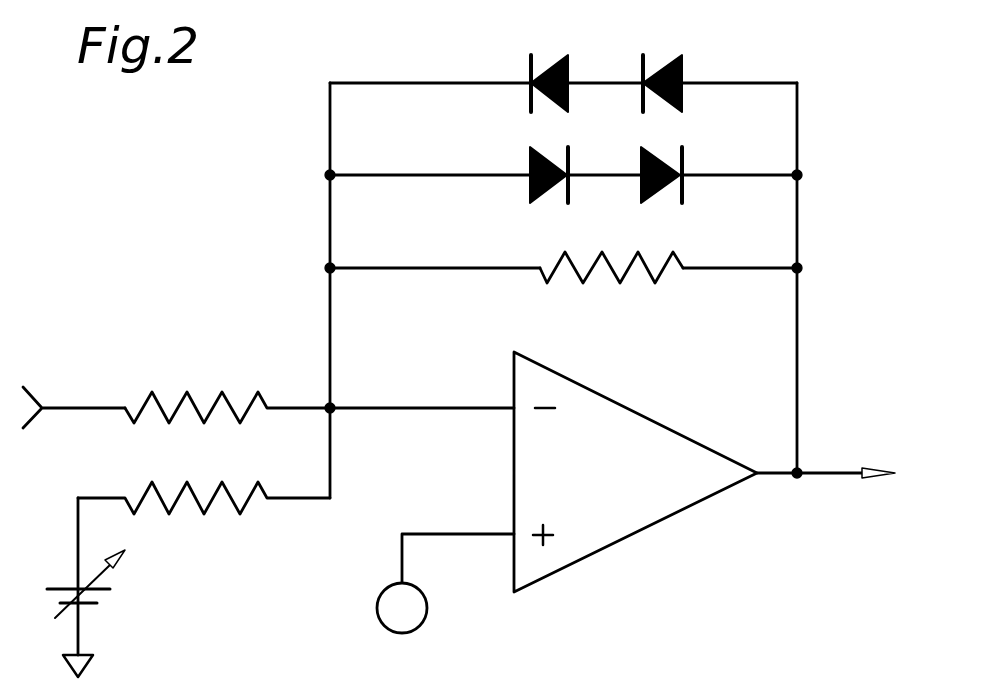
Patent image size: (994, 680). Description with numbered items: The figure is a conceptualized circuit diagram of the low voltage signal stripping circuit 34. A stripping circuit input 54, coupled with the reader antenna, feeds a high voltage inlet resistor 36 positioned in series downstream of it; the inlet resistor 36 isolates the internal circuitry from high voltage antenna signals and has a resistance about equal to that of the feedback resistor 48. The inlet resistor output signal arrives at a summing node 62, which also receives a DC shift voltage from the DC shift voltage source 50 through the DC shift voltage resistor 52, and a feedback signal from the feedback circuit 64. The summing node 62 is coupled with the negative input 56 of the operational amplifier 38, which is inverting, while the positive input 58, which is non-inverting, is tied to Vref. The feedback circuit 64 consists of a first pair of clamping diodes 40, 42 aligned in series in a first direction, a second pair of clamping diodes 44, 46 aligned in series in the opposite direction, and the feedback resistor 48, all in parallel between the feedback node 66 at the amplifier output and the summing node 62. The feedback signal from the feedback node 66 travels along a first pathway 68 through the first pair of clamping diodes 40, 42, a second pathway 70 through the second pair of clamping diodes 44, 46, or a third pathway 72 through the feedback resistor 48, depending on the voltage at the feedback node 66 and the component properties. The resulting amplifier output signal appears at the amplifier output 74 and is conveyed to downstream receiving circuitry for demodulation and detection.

The low voltage signal stripping circuit 34 is at (240, 178).
The high voltage inlet resistor 36 is at (239, 396).
The operational amplifier 38 is at (610, 412).
The first pair of clamping diodes 40 is at (565, 58).
The first pair of clamping diodes 42 is at (680, 58).
The second pair of clamping diodes 44 is at (547, 203).
The second pair of clamping diodes 46 is at (658, 203).
The feedback resistor 48 is at (622, 282).
The DC shift voltage source 50 is at (85, 596).
The DC shift voltage resistor 52 is at (252, 505).
The stripping circuit input 54 is at (37, 392).
The negative input 56 is at (512, 410).
The positive input 58 is at (512, 537).
The summing node 62 is at (332, 406).
The feedback circuit 64 is at (800, 140).
The feedback node 66 is at (797, 478).
The first pathway 68 is at (460, 82).
The second pathway 70 is at (458, 173).
The third pathway 72 is at (458, 266).
The amplifier output 74 is at (868, 468).